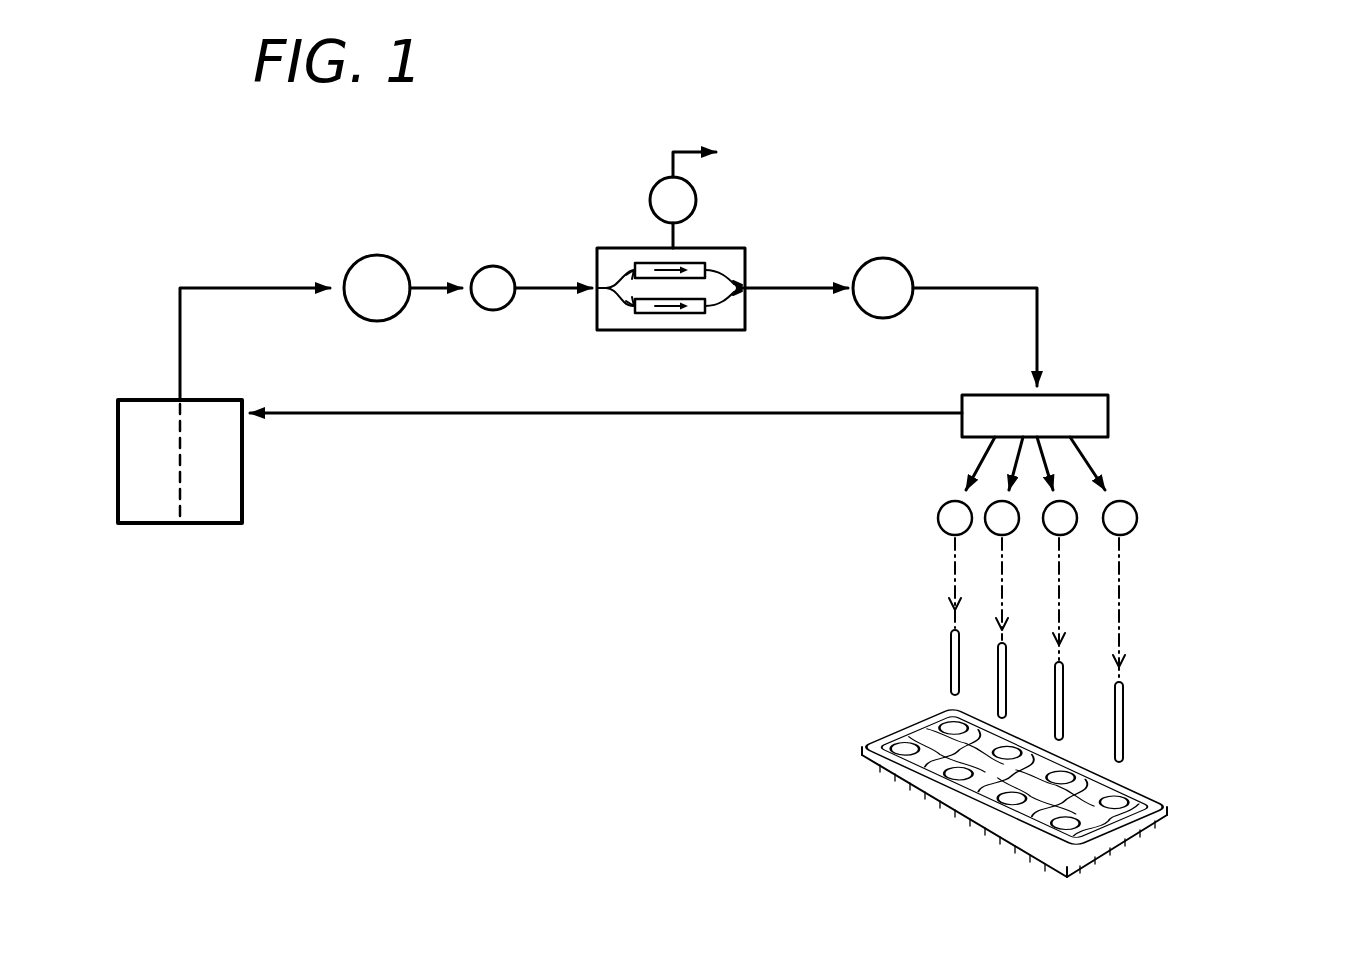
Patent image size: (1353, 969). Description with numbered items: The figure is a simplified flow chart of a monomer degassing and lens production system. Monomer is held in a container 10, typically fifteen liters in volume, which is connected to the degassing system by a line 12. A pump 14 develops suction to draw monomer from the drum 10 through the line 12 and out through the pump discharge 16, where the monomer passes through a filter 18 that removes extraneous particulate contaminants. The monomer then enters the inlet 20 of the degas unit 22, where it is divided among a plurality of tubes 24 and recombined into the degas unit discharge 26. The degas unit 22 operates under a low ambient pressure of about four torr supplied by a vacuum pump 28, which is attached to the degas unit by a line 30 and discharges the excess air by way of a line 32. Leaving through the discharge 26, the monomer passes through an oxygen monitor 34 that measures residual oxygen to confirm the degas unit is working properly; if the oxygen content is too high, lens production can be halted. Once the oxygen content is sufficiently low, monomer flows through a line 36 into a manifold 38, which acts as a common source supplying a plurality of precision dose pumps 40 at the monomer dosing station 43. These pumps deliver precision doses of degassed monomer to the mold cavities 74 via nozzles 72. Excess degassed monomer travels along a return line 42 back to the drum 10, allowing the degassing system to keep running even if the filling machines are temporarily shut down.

The container 10 is at (118, 476).
The line 12 is at (270, 287).
The pump 14 is at (390, 259).
The pump discharge 16 is at (432, 293).
The filter 18 is at (503, 267).
The inlet 20 is at (550, 293).
The degas unit 22 is at (652, 331).
The tubes 24 is at (695, 263).
The degas unit discharge 26 is at (777, 290).
The vacuum pump 28 is at (697, 199).
The line 30 is at (672, 237).
The line 32 is at (698, 151).
The oxygen monitor 34 is at (900, 262).
The line 36 is at (1037, 305).
The manifold 38 is at (1108, 413).
The precision dose pumps 40 is at (995, 504).
The return line 42 is at (655, 414).
The monomer dosing station 43 is at (1195, 643).
The nozzles 72 is at (950, 650).
The mold cavities 74 is at (1135, 795).